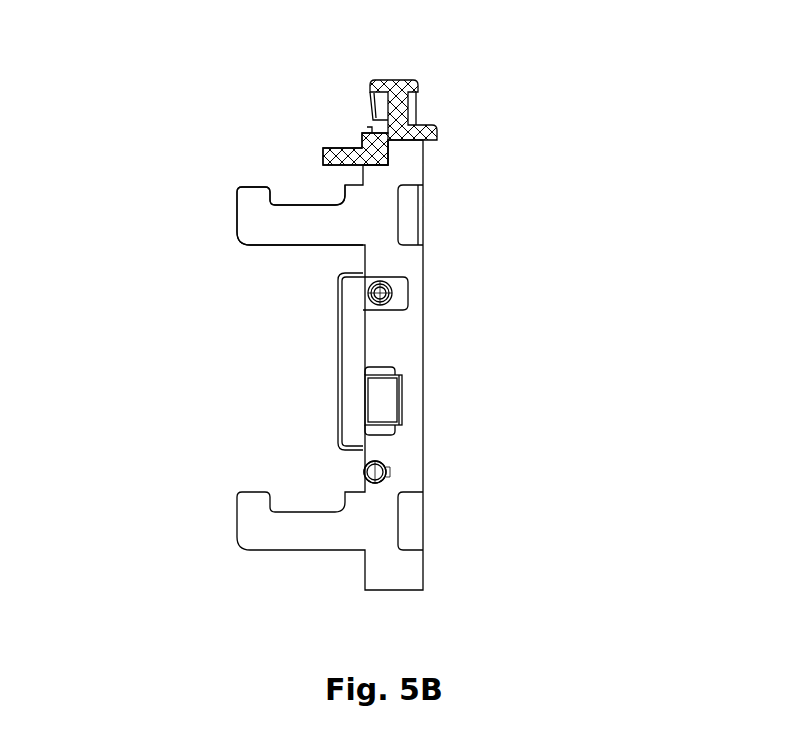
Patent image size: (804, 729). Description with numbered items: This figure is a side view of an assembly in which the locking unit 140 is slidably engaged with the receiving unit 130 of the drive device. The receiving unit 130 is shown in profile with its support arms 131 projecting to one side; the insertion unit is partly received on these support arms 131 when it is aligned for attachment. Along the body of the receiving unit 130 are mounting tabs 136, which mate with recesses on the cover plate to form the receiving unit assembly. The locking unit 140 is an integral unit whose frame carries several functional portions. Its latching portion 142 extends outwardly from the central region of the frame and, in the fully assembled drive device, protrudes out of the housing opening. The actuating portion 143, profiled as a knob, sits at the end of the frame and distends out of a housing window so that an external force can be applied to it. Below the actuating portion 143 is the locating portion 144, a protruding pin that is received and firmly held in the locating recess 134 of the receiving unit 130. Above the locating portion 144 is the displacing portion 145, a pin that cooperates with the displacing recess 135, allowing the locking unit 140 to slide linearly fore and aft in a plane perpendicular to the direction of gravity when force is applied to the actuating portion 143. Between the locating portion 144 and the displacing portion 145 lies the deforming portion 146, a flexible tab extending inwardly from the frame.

The receiving unit 130 is at (267, 162).
The support arms 131 is at (252, 217).
The locating recess 134 is at (387, 468).
The displacing recess 135 is at (400, 295).
The mounting tabs 136 is at (415, 167).
The locking unit 140 is at (428, 72).
The latching portion 142 is at (330, 152).
The actuating portion 143 is at (340, 370).
The locating portion 144 is at (372, 470).
The displacing portion 145 is at (375, 293).
The deforming portion 146 is at (388, 405).